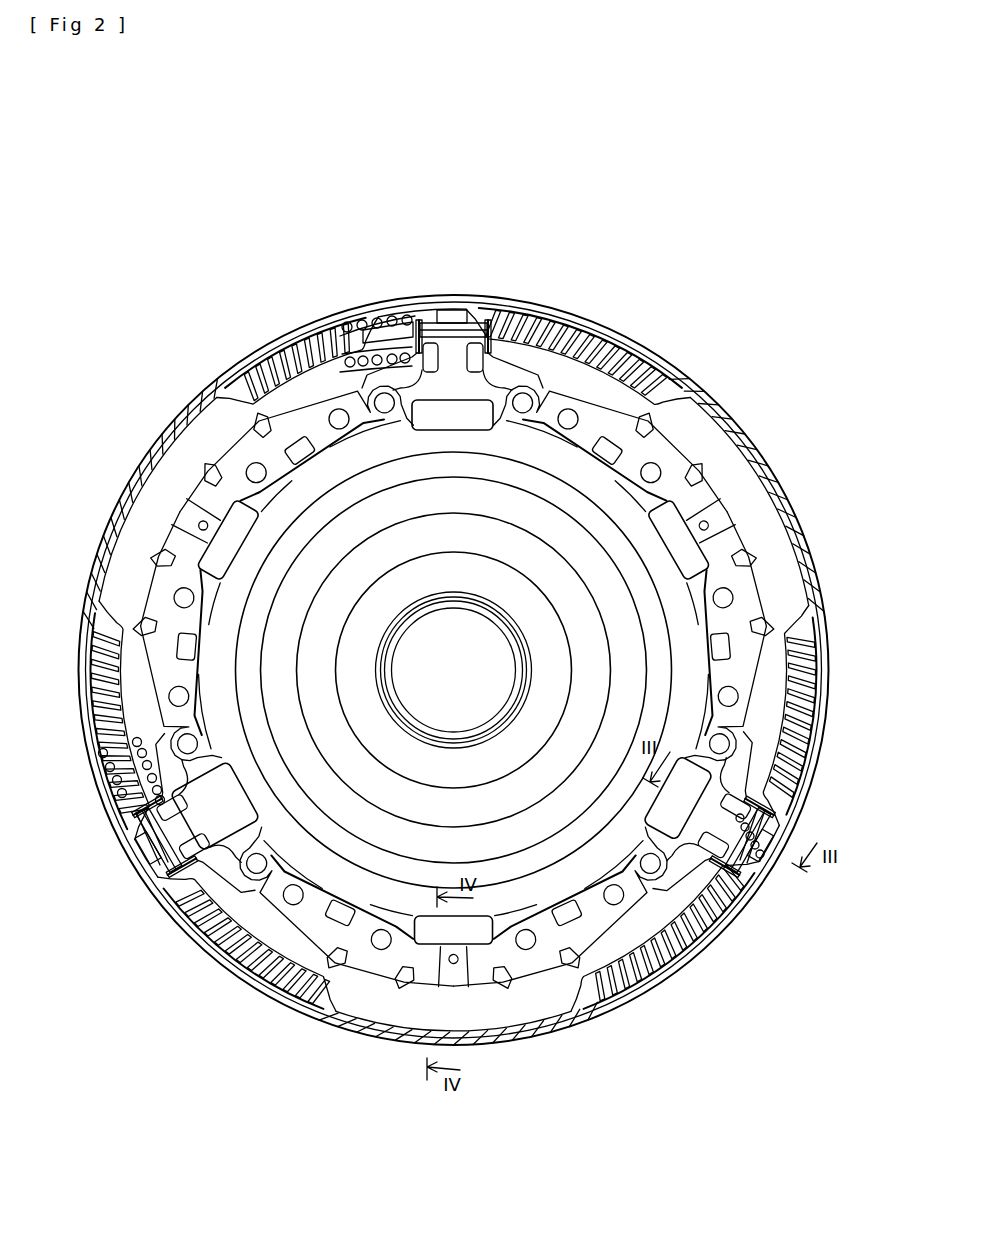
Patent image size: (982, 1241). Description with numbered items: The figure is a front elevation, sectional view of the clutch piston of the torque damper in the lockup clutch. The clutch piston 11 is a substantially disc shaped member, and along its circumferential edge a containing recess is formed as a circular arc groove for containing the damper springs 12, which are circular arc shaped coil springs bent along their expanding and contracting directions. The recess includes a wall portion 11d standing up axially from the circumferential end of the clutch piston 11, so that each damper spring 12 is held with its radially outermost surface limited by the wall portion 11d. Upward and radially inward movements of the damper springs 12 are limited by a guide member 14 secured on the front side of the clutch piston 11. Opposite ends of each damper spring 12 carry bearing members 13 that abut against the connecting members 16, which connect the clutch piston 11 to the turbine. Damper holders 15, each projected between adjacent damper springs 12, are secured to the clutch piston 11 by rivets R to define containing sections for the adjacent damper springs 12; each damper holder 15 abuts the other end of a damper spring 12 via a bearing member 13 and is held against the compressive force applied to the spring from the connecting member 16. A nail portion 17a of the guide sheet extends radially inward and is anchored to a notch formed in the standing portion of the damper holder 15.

The clutch piston 11 is at (665, 346).
The wall portion 11d is at (723, 414).
The damper spring 12 is at (300, 350).
The bearing member 13 is at (410, 318).
The guide member 14 is at (193, 432).
The damper holder 15 is at (488, 387).
The connecting member 16 is at (488, 320).
The nail portion 17a is at (449, 305).
The rivet R is at (385, 395).